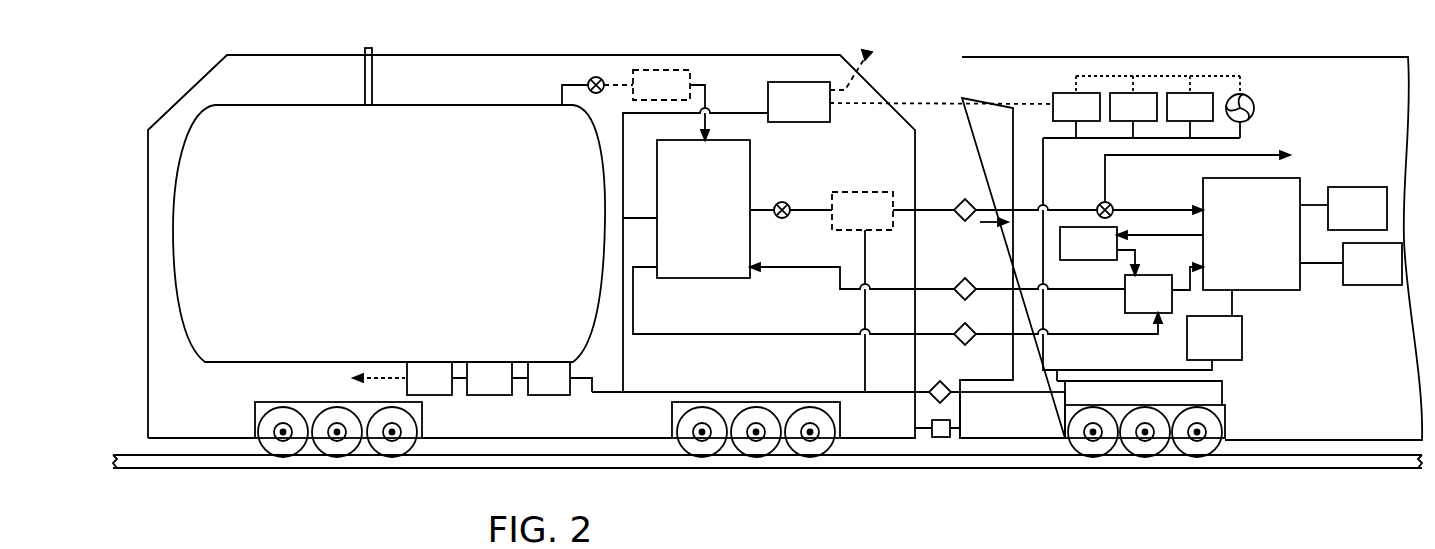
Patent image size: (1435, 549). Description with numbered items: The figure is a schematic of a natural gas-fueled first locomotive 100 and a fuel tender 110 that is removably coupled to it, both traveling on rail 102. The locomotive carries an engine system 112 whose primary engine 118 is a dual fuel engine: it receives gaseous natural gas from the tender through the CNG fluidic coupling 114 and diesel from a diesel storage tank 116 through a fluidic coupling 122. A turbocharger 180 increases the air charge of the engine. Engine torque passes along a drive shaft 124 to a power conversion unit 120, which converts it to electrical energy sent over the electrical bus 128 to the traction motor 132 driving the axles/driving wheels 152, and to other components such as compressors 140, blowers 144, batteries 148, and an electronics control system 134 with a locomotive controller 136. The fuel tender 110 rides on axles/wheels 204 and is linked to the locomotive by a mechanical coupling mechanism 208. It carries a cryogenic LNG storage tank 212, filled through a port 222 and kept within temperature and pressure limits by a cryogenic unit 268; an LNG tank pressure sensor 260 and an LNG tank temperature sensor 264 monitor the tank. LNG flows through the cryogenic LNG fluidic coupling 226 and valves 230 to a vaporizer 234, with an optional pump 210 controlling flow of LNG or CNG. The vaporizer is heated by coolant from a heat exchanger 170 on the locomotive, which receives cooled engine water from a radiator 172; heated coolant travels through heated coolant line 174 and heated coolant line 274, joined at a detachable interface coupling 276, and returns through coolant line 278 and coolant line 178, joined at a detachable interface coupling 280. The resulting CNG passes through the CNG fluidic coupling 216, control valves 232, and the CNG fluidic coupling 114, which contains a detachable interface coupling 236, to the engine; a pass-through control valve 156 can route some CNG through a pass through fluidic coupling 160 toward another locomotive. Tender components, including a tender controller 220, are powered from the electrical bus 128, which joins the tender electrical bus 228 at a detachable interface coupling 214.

The first locomotive 100 is at (1127, 57).
The rail 102 is at (968, 469).
The fuel tender 110 is at (270, 53).
The engine system 112 is at (1294, 289).
The CNG fluidic coupling 114 is at (1004, 214).
The diesel storage tank 116 is at (1372, 264).
The primary engine 118 is at (1251, 234).
The power conversion unit 120 is at (1214, 338).
The fluidic coupling 122 is at (1318, 282).
The drive shaft 124 is at (1235, 300).
The electrical bus 128 is at (1060, 370).
The traction motor 132 is at (1139, 393).
The electronics control system 134 is at (1140, 99).
The locomotive controller 136 is at (1076, 107).
The compressors 140 is at (1133, 107).
The blowers 144 is at (1256, 103).
The batteries 148 is at (1190, 107).
The axles/driving wheels 152 is at (1142, 453).
The pass-through control valve 156 is at (1099, 204).
The pass through fluidic coupling 160 is at (1270, 152).
The heat exchanger 170 is at (1164, 288).
The radiator 172 is at (1131, 251).
The heated coolant line 174 is at (1063, 292).
The coolant line 178 is at (1122, 338).
The turbocharger 180 is at (1343, 208).
The axles/wheels 204 is at (802, 456).
The mechanical coupling mechanism 208 is at (940, 440).
The pump 210 is at (748, 231).
The LNG storage tank 212 is at (389, 233).
The detachable interface coupling 214 is at (931, 399).
The CNG fluidic coupling 216 is at (812, 205).
The tender controller 220 is at (910, 77).
The port 222 is at (373, 93).
The cryogenic LNG fluidic coupling 226 is at (578, 84).
The electrical bus 228 is at (757, 391).
The valves 230 is at (599, 77).
The control valves 232 is at (788, 217).
The vaporizer 234 is at (686, 209).
The detachable interface coupling 236 is at (969, 223).
The LNG tank pressure sensor 260 is at (490, 378).
The LNG tank temperature sensor 264 is at (560, 378).
The cryogenic unit 268 is at (374, 378).
The heated coolant line 274 is at (836, 285).
The detachable interface coupling 276 is at (955, 283).
The coolant line 278 is at (810, 338).
The detachable interface coupling 280 is at (960, 343).